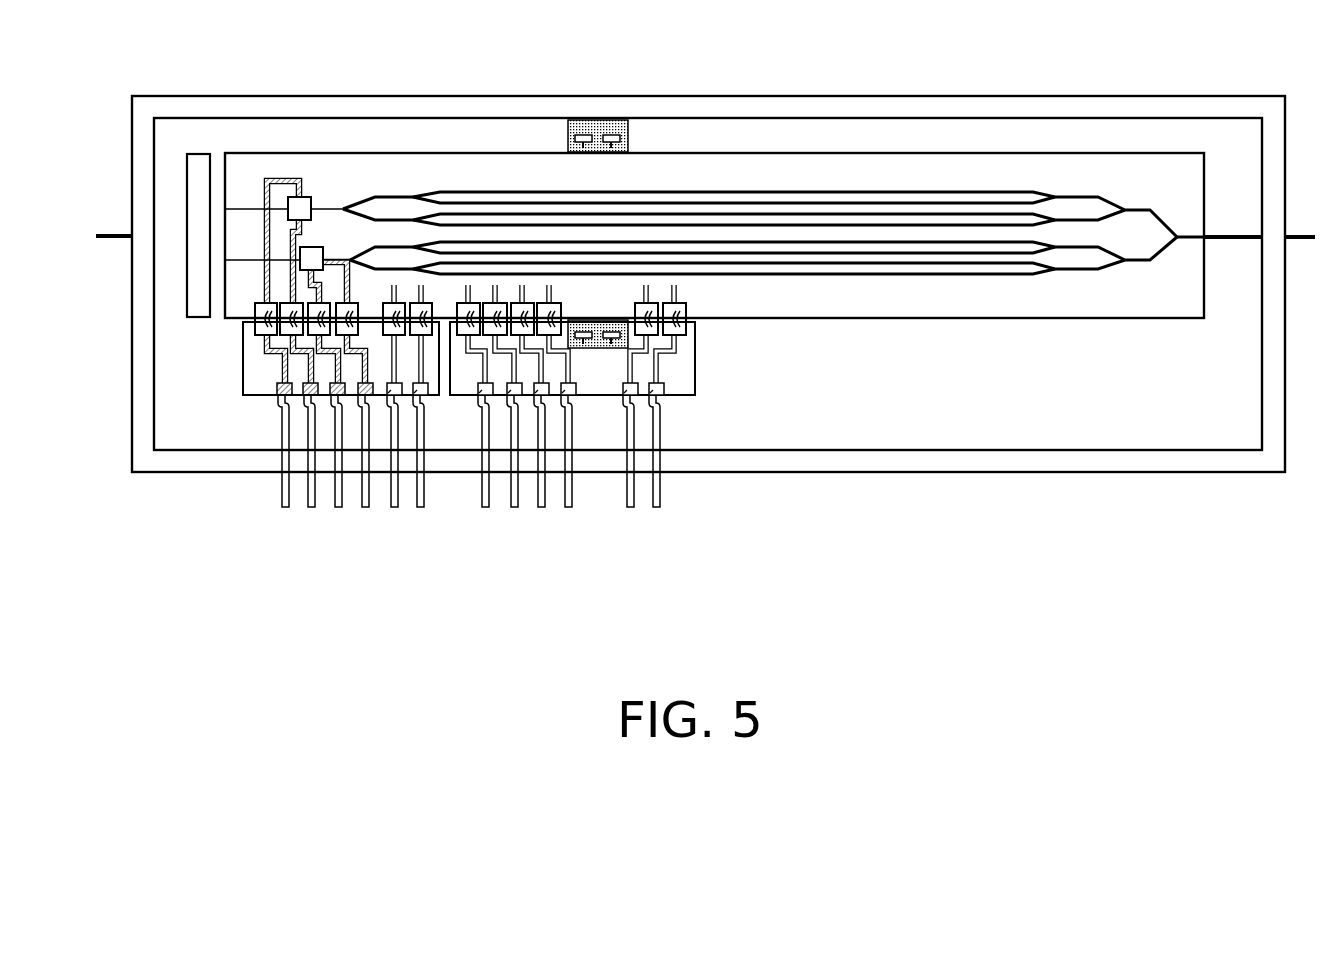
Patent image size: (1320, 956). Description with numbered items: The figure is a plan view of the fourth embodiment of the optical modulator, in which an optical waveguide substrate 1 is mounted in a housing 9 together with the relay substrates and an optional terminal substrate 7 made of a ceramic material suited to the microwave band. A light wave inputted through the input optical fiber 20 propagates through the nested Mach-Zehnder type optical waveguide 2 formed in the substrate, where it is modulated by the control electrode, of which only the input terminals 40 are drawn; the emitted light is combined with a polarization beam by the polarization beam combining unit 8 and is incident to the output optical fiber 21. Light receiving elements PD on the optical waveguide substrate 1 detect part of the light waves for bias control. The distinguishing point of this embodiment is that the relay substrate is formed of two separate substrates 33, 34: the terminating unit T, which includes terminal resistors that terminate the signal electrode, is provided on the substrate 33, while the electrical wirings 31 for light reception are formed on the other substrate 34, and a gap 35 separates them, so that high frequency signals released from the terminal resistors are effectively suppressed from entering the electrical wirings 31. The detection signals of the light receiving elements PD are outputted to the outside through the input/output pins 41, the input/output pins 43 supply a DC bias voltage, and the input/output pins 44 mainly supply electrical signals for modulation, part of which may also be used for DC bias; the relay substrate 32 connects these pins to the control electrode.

The optical waveguide substrate 1 is at (880, 153).
The optical waveguide 2 is at (1108, 190).
The terminal substrate 7 is at (628, 136).
The polarization beam combining unit 8 is at (205, 154).
The housing 9 is at (780, 96).
The input optical fiber 20 is at (1222, 237).
The output optical fiber 21 is at (114, 238).
The electrical wirings for light reception 31 is at (285, 358).
The second relay substrate 32 is at (696, 348).
The substrate where the terminating unit is provided 33 is at (690, 388).
The substrate where the electrical wirings for light reception are formed 34 is at (243, 372).
The gap between relay substrates 35 is at (428, 362).
The input terminals 40 is at (254, 325).
The input/output pins 41 is at (372, 516).
The input/output pins 43 is at (428, 516).
The input/output pins 44 is at (482, 516).
The light receiving elements PD is at (302, 197).
The terminating unit T is at (597, 349).